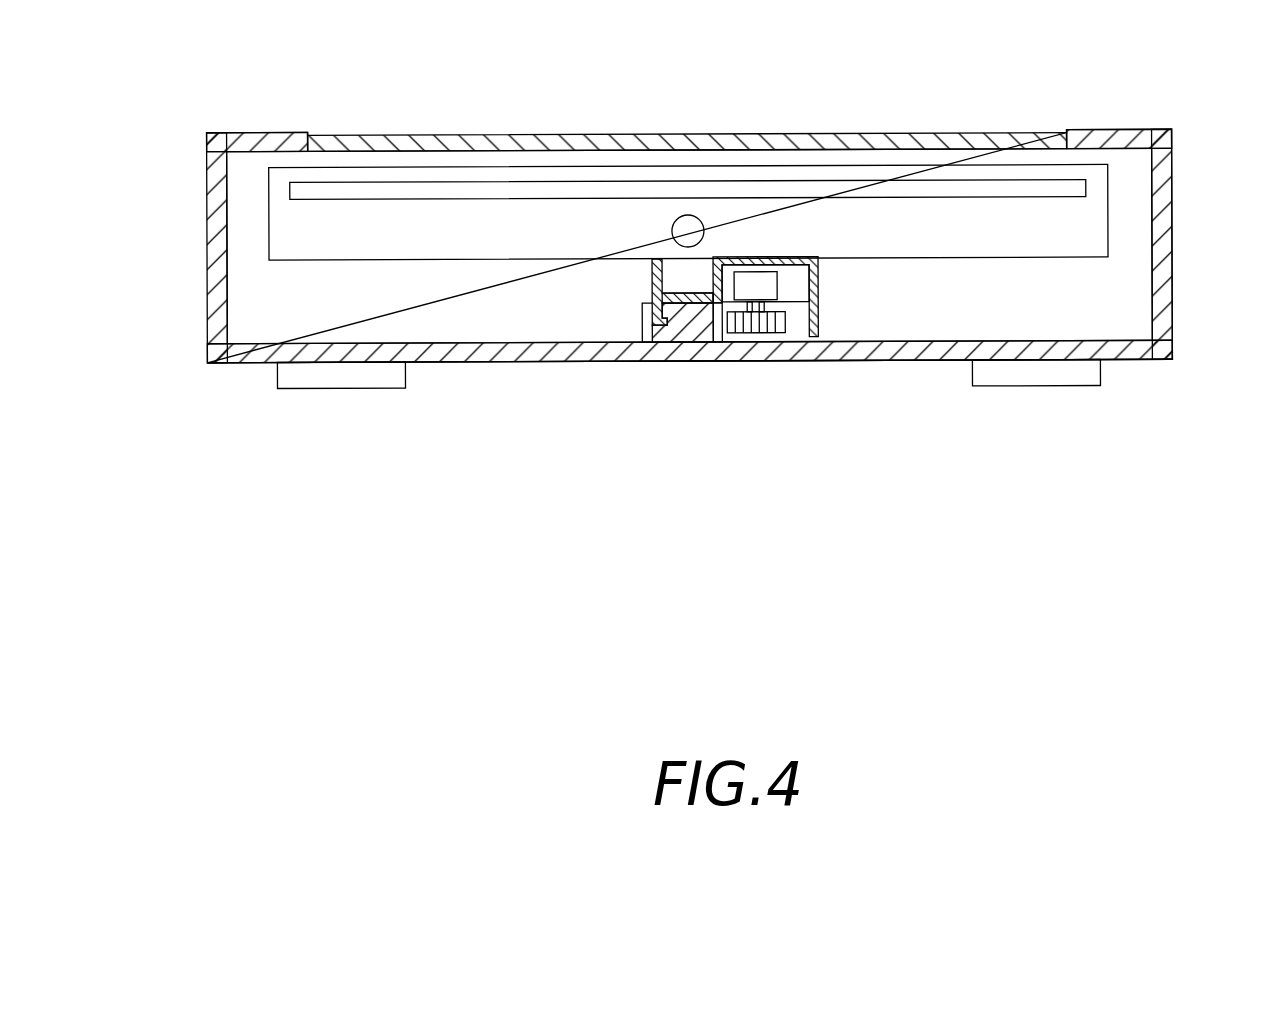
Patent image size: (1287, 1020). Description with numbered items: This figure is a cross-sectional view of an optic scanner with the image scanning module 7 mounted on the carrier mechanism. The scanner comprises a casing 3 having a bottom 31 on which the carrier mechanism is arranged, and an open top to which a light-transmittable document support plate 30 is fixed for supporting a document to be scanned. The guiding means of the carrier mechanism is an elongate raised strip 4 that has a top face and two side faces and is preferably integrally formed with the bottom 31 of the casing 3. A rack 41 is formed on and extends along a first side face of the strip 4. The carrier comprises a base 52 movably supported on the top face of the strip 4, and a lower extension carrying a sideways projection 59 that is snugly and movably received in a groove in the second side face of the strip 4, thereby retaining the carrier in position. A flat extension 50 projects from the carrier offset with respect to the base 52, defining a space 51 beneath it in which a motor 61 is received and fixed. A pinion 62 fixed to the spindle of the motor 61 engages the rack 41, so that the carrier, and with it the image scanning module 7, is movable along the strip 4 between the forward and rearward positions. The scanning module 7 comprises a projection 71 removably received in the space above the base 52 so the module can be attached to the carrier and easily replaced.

The casing 3 is at (733, 243).
The document support plate 30 is at (882, 143).
The bottom 31 is at (1052, 340).
The image scanning module 7 is at (478, 218).
The projection 71 is at (610, 188).
The base 52 is at (686, 297).
The sideways projection 59 is at (672, 323).
The elongate raised strip 4 is at (687, 327).
The rack 41 is at (718, 327).
The flat extension 50 is at (824, 235).
The space 51 is at (797, 285).
The motor 61 is at (750, 277).
The pinion 62 is at (767, 327).